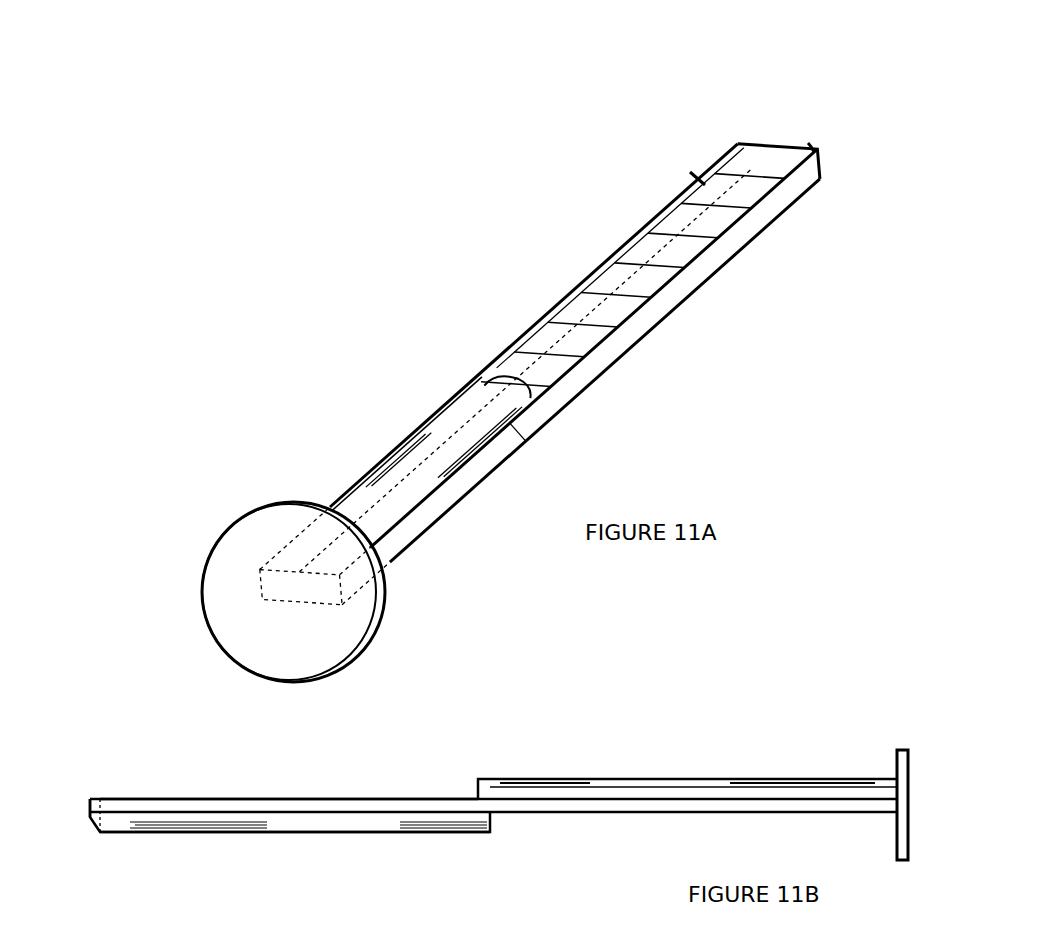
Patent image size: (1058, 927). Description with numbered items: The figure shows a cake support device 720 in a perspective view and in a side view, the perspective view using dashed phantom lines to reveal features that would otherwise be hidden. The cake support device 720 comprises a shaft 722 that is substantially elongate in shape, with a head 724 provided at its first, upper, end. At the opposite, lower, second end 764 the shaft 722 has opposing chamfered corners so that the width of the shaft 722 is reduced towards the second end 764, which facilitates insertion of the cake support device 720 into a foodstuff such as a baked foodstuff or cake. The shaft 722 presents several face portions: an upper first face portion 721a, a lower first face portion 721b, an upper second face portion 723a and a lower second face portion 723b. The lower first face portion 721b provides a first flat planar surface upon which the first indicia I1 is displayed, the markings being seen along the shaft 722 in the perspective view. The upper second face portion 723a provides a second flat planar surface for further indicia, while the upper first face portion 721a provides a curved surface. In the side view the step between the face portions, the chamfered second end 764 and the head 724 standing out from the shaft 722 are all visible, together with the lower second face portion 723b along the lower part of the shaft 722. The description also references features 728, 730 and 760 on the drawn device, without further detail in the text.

In FIG. 11A, the cake support device 720 is at (390, 302).
In FIG. 11B, the cake support device 720 is at (662, 727).
In FIG. 11A, the upper first face portion 721a is at (430, 458).
In FIG. 11B, the upper first face portion 721a is at (680, 817).
In FIG. 11B, the lower first face portion 721b is at (363, 822).
In FIG. 11A, the shaft 722 is at (690, 285).
In FIG. 11B, the shaft 722 is at (452, 792).
In FIG. 11B, the upper second face portion 723a is at (572, 777).
In FIG. 11B, the lower second face portion 723b is at (302, 796).
In FIG. 11A, the head 724 is at (345, 633).
In FIG. 11B, the head 724 is at (910, 752).
In FIG. 11A, the side surface 728 is at (657, 287).
In FIG. 11A, the scale markings 730 is at (697, 178).
In FIG. 11A, the bottom surface 760 is at (623, 356).
In FIG. 11B, the bottom surface 760 is at (262, 808).
In FIG. 11A, the second end 764 is at (808, 143).
In FIG. 11B, the second end 764 is at (93, 803).
In FIG. 11A, the first indicia I1 is at (598, 302).